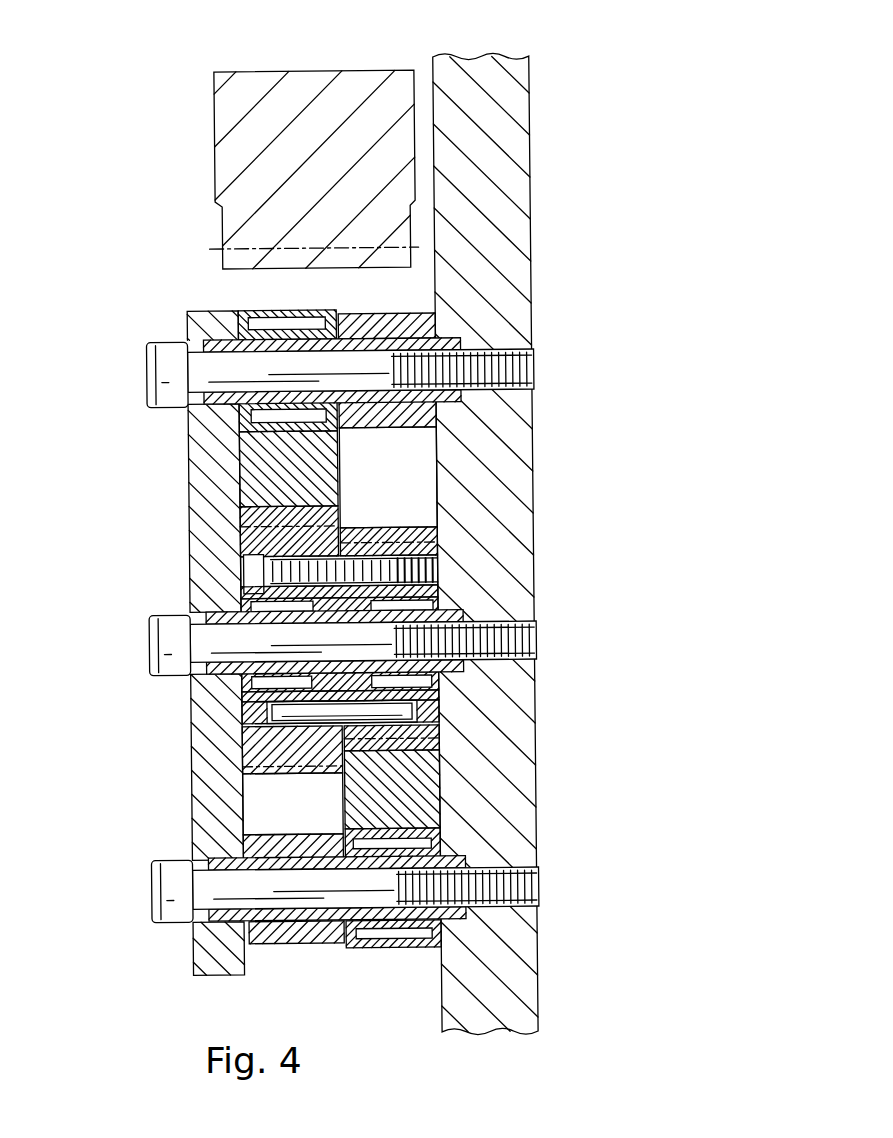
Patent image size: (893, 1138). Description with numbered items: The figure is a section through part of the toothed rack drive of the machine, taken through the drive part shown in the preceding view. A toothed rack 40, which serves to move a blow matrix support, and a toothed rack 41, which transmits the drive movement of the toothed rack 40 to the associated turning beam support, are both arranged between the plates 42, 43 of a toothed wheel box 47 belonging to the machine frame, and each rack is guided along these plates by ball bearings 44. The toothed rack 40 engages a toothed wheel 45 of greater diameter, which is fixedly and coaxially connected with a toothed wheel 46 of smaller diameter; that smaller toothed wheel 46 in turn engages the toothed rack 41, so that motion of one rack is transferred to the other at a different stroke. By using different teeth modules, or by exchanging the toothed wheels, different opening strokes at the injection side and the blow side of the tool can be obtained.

The toothed rack 40 is at (258, 452).
The toothed rack 41 is at (400, 800).
The plate 42 is at (472, 90).
The plate 43 is at (196, 440).
The ball bearing 44 is at (255, 308).
The toothed wheel 45 is at (250, 548).
The toothed wheel 46 is at (440, 547).
The toothed wheel box 47 is at (153, 712).